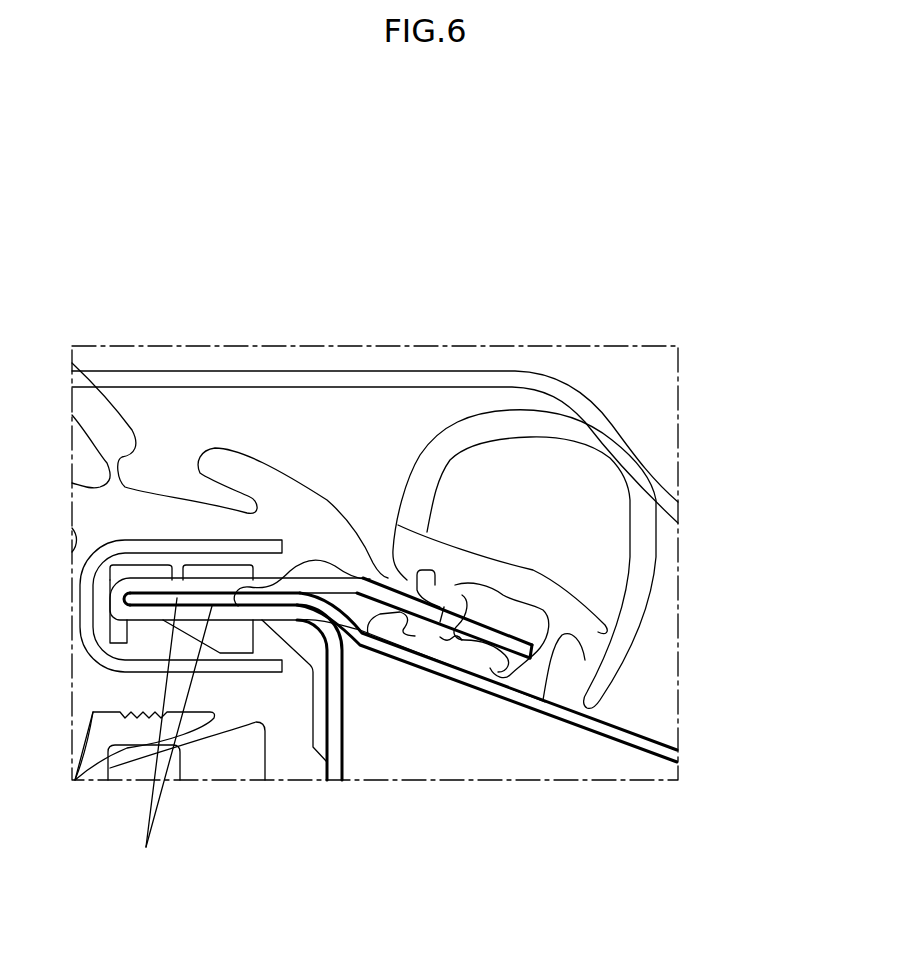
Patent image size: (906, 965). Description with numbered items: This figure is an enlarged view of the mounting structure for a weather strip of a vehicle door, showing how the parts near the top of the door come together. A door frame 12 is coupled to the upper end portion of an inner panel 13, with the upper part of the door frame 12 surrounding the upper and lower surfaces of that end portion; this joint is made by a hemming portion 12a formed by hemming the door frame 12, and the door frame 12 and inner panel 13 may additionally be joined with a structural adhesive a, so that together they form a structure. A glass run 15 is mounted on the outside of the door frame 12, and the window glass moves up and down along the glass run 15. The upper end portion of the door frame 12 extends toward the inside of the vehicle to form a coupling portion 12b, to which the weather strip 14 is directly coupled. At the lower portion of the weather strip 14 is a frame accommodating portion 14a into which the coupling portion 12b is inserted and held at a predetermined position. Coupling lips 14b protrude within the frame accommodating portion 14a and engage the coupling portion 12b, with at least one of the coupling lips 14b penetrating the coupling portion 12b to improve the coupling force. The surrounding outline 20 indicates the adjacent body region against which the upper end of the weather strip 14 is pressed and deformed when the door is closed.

The door frame 20 is at (232, 381).
The weather strip 14 is at (637, 557).
The inner panel 13 is at (603, 727).
The door frame 12 is at (337, 747).
The hemming portion 12a is at (150, 612).
The coupling portion 12b is at (428, 610).
The frame accommodating portion 14a is at (448, 643).
The coupling lip 14b is at (467, 637).
The glass run 15 is at (287, 740).
The structural adhesive a is at (173, 735).